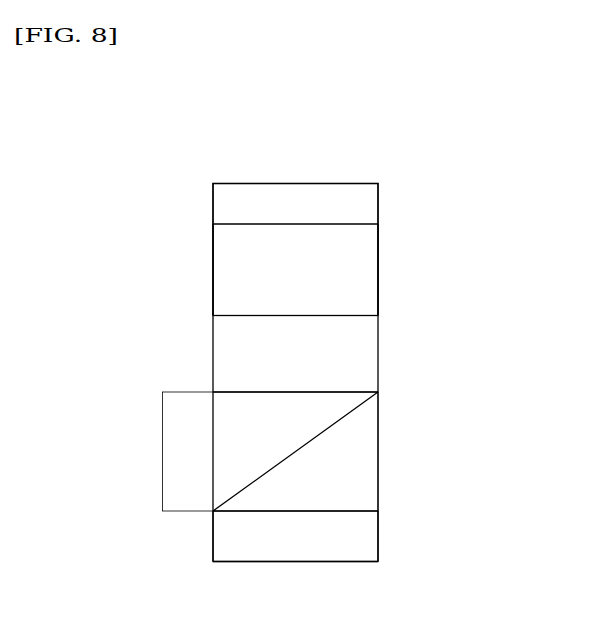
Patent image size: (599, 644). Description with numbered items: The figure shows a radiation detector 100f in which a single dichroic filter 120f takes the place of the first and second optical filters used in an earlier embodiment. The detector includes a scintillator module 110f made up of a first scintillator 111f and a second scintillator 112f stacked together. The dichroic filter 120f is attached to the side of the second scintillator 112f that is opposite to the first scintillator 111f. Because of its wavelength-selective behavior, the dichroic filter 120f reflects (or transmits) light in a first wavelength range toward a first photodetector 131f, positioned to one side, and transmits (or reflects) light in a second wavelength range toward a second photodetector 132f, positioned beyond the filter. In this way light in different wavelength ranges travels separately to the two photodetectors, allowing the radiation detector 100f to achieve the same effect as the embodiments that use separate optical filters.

The radiation detector 100f is at (424, 142).
The scintillator module 110f is at (478, 202).
The first scintillator 111f is at (367, 205).
The second scintillator 112f is at (367, 316).
The dichroic filter 120f is at (366, 470).
The first photodetector 131f is at (163, 452).
The second photodetector 132f is at (300, 550).